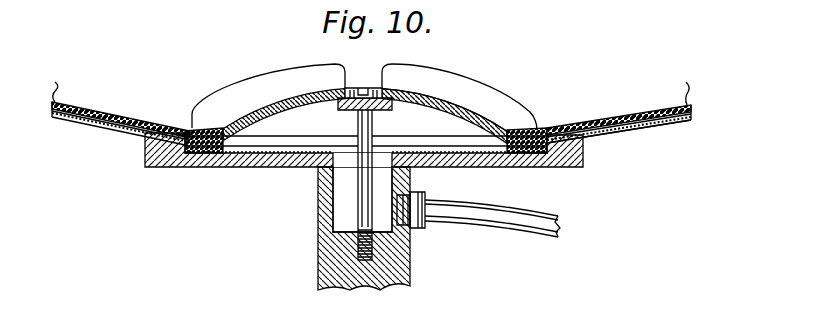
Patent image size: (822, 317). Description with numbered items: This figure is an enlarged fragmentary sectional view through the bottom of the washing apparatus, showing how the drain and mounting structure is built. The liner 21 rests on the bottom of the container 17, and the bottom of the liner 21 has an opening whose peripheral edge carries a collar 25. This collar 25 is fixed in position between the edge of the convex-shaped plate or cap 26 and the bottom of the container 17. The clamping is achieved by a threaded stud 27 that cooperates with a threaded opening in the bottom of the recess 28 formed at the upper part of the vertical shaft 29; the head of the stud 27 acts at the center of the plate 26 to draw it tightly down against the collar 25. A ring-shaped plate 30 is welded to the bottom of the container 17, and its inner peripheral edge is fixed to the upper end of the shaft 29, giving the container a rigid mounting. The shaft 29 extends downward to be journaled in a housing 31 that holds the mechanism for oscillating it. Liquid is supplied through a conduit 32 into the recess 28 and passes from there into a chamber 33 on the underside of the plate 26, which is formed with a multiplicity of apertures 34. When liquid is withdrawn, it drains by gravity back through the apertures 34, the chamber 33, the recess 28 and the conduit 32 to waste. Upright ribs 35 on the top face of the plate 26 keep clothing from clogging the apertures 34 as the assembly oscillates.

The container 17 is at (647, 122).
The liner 21 is at (628, 113).
The collar 25 is at (532, 167).
The plate 26 is at (514, 131).
The stud 27 is at (358, 120).
The recess 28 is at (347, 205).
The vertical shaft 29 is at (330, 266).
The ring-shaped plate 30 is at (210, 168).
The housing 31 is at (365, 174).
The conduit 32 is at (494, 219).
The chamber 33 is at (365, 116).
The apertures 34 is at (476, 124).
The upright ribs 35 is at (283, 71).